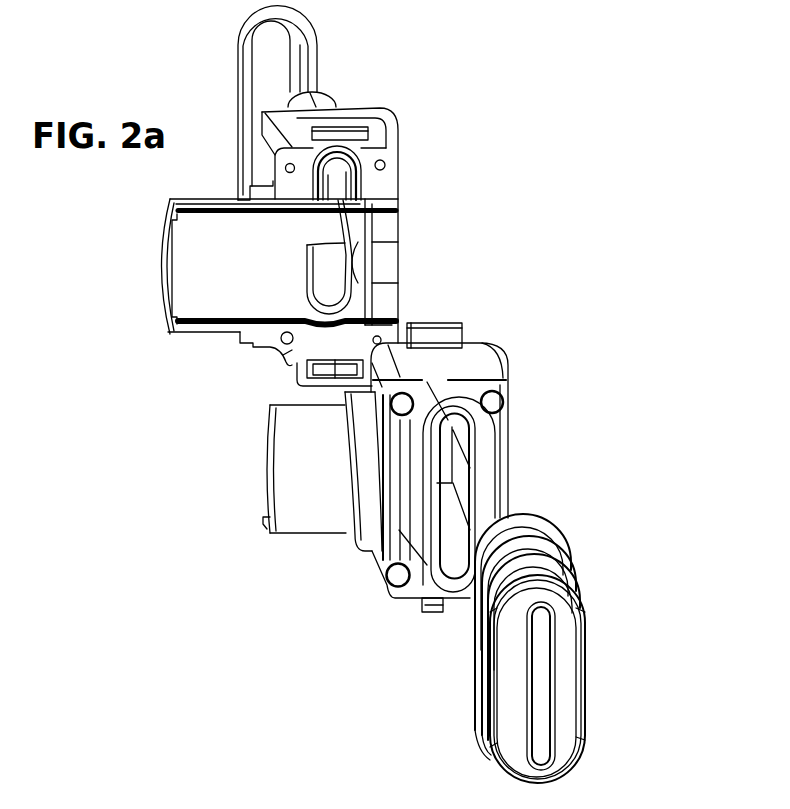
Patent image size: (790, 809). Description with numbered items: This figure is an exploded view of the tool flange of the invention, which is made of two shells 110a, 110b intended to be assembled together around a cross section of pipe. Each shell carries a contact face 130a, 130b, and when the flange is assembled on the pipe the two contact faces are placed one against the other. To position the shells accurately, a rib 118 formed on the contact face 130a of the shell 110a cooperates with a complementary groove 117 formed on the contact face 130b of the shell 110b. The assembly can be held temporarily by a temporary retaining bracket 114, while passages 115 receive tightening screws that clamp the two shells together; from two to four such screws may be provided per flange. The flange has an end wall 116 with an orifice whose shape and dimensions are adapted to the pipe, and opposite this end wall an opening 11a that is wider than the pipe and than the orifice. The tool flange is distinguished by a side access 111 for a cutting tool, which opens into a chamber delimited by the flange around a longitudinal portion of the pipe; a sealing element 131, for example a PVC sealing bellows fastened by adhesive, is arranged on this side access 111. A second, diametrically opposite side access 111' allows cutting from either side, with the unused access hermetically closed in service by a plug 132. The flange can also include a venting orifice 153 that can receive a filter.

The plug 132 is at (297, 42).
The shell 110a is at (381, 102).
The side access 111' is at (388, 147).
The end wall 116 is at (399, 254).
The opening 11a is at (163, 257).
The rib 118 is at (174, 336).
The contact face 130a is at (278, 357).
The temporary retaining bracket 114 is at (459, 330).
The shell 110b is at (512, 371).
The passage 115 is at (505, 403).
The side access 111 is at (505, 494).
The groove 117 is at (268, 413).
The contact face 130b is at (264, 520).
The venting orifice 153 is at (428, 610).
The sealing element 131 is at (587, 681).